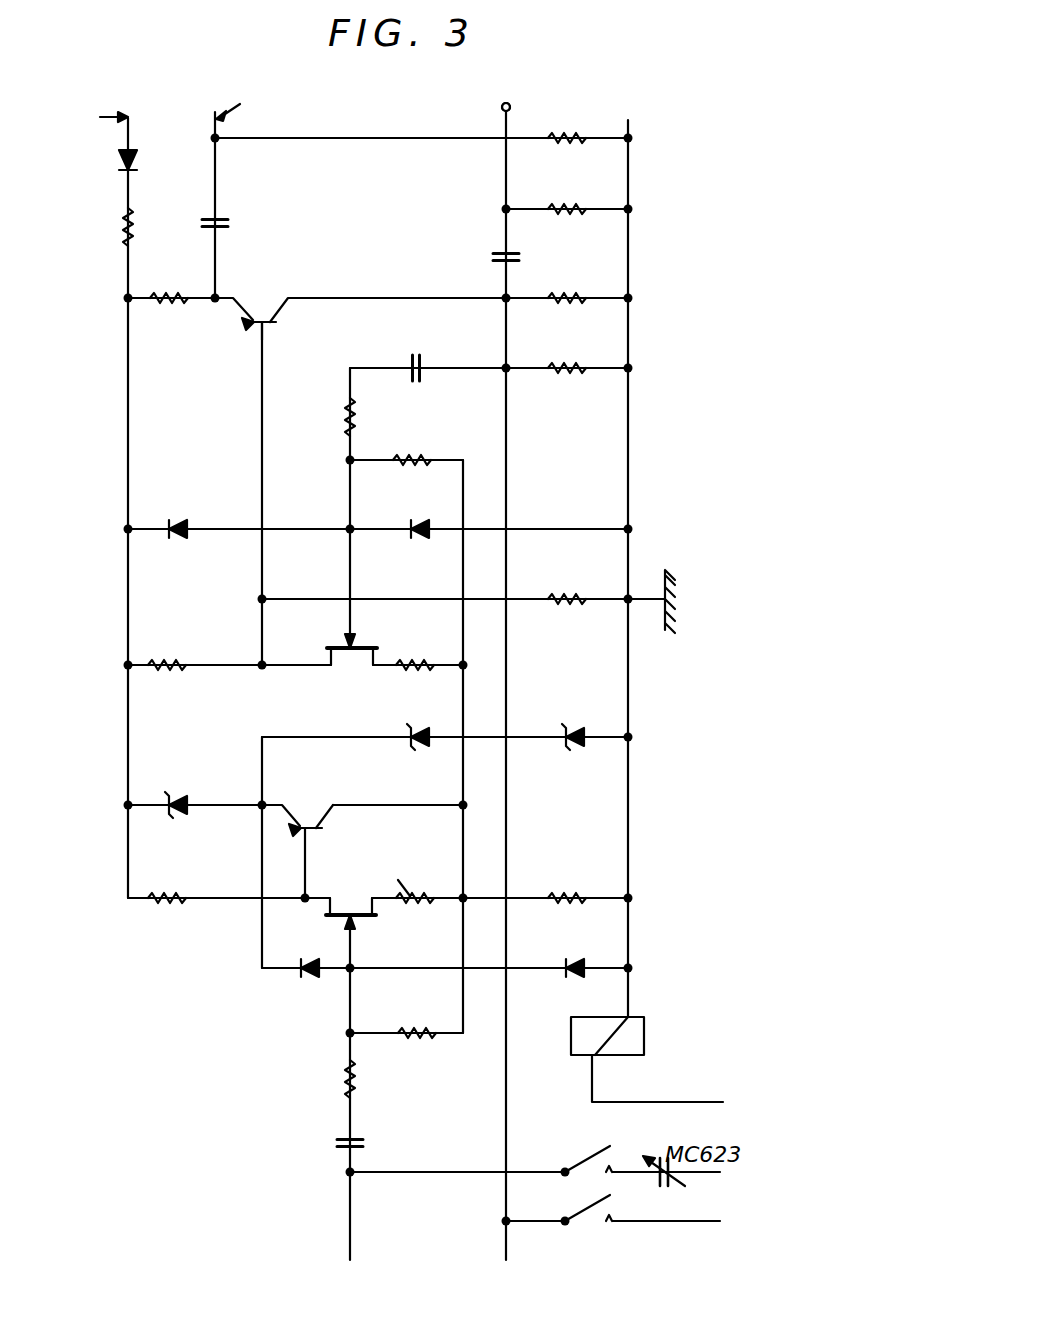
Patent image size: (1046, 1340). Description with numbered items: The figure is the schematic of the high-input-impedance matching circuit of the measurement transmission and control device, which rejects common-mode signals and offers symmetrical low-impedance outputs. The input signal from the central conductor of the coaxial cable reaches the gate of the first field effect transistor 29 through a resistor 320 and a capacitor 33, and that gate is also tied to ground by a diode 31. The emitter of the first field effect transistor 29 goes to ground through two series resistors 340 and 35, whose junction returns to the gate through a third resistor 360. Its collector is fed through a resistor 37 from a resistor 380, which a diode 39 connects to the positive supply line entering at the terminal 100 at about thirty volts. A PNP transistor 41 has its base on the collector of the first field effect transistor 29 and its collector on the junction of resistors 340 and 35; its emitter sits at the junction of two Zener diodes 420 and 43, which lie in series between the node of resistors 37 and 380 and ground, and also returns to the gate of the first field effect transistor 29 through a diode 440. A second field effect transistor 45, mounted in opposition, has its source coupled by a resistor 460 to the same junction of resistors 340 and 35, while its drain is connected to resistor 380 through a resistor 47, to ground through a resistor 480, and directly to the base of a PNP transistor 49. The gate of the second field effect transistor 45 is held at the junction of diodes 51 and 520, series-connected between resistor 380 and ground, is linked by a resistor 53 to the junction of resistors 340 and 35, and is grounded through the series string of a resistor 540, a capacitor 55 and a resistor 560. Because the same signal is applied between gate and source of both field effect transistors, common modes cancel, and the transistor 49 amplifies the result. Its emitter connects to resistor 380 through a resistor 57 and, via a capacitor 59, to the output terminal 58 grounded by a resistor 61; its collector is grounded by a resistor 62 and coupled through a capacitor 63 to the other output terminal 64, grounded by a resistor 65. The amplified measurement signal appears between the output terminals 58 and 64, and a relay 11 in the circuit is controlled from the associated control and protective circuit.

The output terminal 100 is at (92, 118).
The output terminal 58 is at (239, 116).
The diode 39 is at (115, 160).
The resistor 380 is at (125, 233).
The resistor 57 is at (190, 320).
The PNP transistor 49 is at (245, 316).
The capacitor 59 is at (222, 220).
The output terminal 64 is at (502, 107).
The resistor 61 is at (590, 118).
The resistor 65 is at (588, 190).
The capacitor 63 is at (493, 252).
The resistor 62 is at (582, 308).
The resistor 560 is at (585, 378).
The capacitor 55 is at (412, 380).
The resistor 540 is at (346, 428).
The resistor 53 is at (425, 470).
The diode 51 is at (178, 540).
The diode 520 is at (420, 540).
The resistor 480 is at (568, 602).
The resistor 47 is at (182, 675).
The second field effect transistor 45 is at (351, 611).
The resistor 460 is at (430, 675).
The Zener diode 43 is at (567, 760).
The Zener diode 420 is at (178, 816).
The PNP transistor 41 is at (317, 832).
The resistor 37 is at (182, 908).
The resistor 340 is at (392, 881).
The first field effect transistor 29 is at (365, 918).
The resistor 35 is at (582, 908).
The diode 440 is at (312, 980).
The diode 31 is at (575, 980).
The relay 11 is at (644, 1040).
The third resistor 360 is at (420, 1043).
The resistor 320 is at (345, 1082).
The capacitor 33 is at (336, 1142).